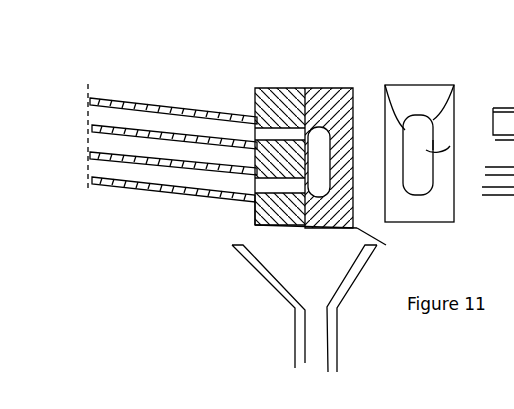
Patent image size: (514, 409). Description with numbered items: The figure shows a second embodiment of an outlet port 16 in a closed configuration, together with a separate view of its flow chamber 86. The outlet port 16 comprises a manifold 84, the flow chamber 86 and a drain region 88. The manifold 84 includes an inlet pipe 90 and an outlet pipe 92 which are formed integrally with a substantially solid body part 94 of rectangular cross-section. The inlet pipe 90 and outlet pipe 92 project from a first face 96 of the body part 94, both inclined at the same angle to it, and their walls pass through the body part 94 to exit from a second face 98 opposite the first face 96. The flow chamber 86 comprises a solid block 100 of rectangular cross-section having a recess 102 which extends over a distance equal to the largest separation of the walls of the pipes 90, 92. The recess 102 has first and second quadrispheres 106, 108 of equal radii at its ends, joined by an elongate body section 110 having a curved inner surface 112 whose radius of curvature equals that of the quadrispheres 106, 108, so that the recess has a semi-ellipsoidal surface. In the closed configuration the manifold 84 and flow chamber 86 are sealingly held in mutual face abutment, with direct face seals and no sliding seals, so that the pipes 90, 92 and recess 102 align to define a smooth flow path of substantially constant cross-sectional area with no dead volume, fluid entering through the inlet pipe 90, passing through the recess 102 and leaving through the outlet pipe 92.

In FIG. 9, the outlet port 16 is at (243, 58).
In FIG. 9, the manifold 84 is at (224, 98).
In FIG. 9, the flow chamber 86 is at (330, 82).
In FIG. 9, the drain region 88 is at (300, 342).
In FIG. 9, the inlet pipe 90 is at (115, 98).
In FIG. 9, the outlet pipe 92 is at (127, 177).
In FIG. 9, the body part 94 is at (254, 209).
In FIG. 9, the first face 96 is at (254, 216).
In FIG. 9, the second face 98 is at (314, 88).
In FIG. 9, the solid block 100 is at (389, 242).
In FIG. 11, the recess 102 is at (388, 87).
In FIG. 11, the first quadrisphere 106 is at (450, 85).
In FIG. 11, the second quadrisphere 108 is at (428, 192).
In FIG. 11, the elongate body section 110 is at (455, 127).
In FIG. 11, the curved inner surface 112 is at (418, 165).